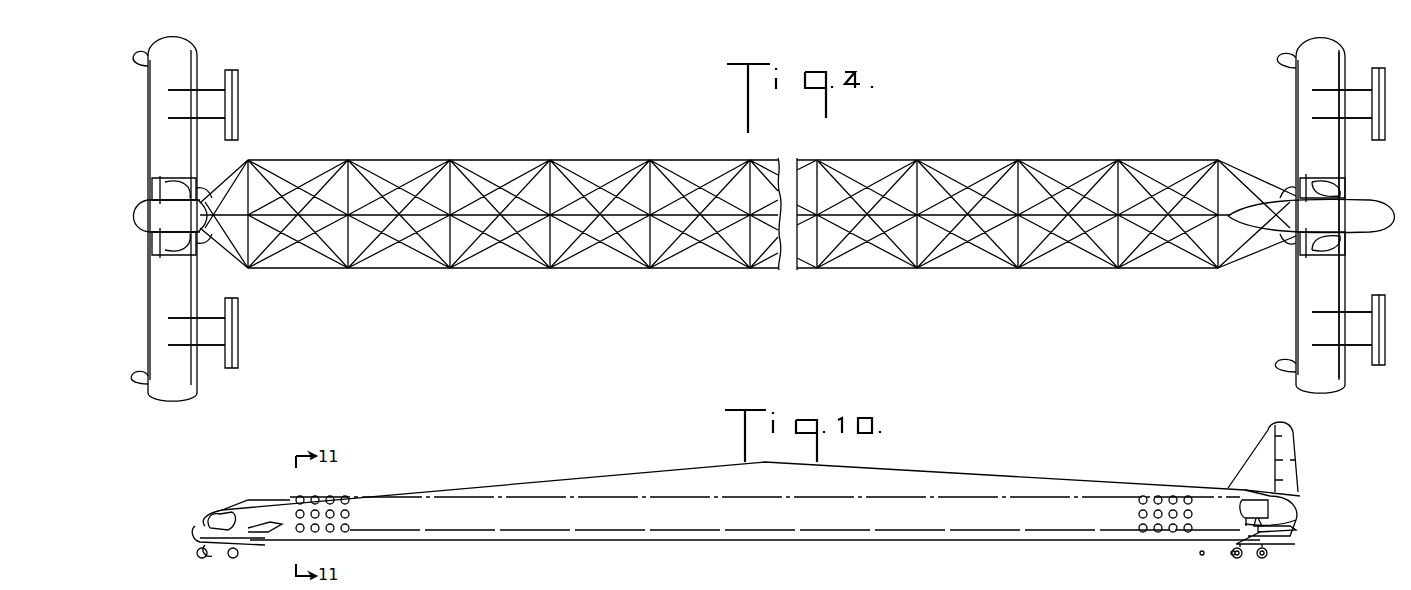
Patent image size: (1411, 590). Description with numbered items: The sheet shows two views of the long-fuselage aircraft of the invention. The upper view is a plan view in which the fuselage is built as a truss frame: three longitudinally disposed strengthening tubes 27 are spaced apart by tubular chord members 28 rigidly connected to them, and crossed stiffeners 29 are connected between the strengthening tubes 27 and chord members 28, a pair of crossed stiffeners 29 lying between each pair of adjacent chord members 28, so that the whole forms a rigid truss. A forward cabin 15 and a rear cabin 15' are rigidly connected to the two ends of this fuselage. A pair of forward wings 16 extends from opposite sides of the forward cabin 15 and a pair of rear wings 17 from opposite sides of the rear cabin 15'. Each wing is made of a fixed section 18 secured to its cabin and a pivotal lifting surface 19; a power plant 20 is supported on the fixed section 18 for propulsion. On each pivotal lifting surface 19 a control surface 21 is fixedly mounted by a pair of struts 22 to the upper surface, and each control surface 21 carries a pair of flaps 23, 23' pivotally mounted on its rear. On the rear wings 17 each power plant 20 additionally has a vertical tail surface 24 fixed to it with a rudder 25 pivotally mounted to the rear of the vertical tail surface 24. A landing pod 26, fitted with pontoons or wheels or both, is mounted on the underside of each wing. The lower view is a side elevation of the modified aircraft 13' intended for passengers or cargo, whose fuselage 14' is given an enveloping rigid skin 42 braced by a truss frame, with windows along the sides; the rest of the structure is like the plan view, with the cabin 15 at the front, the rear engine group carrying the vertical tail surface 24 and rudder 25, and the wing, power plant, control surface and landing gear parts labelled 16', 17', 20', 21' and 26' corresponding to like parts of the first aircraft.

In FIG. 10, the aircraft 13' is at (761, 462).
In FIG. 10, the fuselage 14' is at (855, 514).
In FIG. 4, the forward cabin 15 is at (144, 216).
In FIG. 10, the forward cabin 15 is at (246, 486).
In FIG. 4, the rear cabin 15' is at (1317, 222).
In FIG. 4, the forward wing 16 is at (199, 232).
In FIG. 10, the nacelle 16' is at (236, 553).
In FIG. 4, the rear wing 17 is at (1292, 216).
In FIG. 10, the nacelle 17' is at (1242, 531).
In FIG. 4, the fixed section 18 is at (150, 186).
In FIG. 4, the pivotal lifting surface 19 is at (156, 148).
In FIG. 4, the power plant 20 is at (757, 215).
In FIG. 10, the engine 20' is at (780, 491).
In FIG. 4, the control surface 21 is at (818, 225).
In FIG. 10, the control surface 21 is at (1306, 521).
In FIG. 10, the fin 21' is at (282, 496).
In FIG. 4, the struts 22 is at (178, 118).
In FIG. 4, the flap 23 is at (789, 237).
In FIG. 4, the flap 23' is at (789, 216).
In FIG. 4, the vertical tail surface 24 is at (1346, 182).
In FIG. 10, the vertical tail surface 24 is at (1248, 462).
In FIG. 4, the rudder 25 is at (1346, 190).
In FIG. 10, the rudder 25 is at (1298, 460).
In FIG. 4, the landing pod 26 is at (697, 228).
In FIG. 10, the landing gear 26' is at (1264, 553).
In FIG. 4, the strengthening tubes 27 is at (312, 160).
In FIG. 4, the chord members 28 is at (396, 162).
In FIG. 4, the stiffeners 29 is at (512, 178).
In FIG. 10, the rigid skin 42 is at (584, 480).